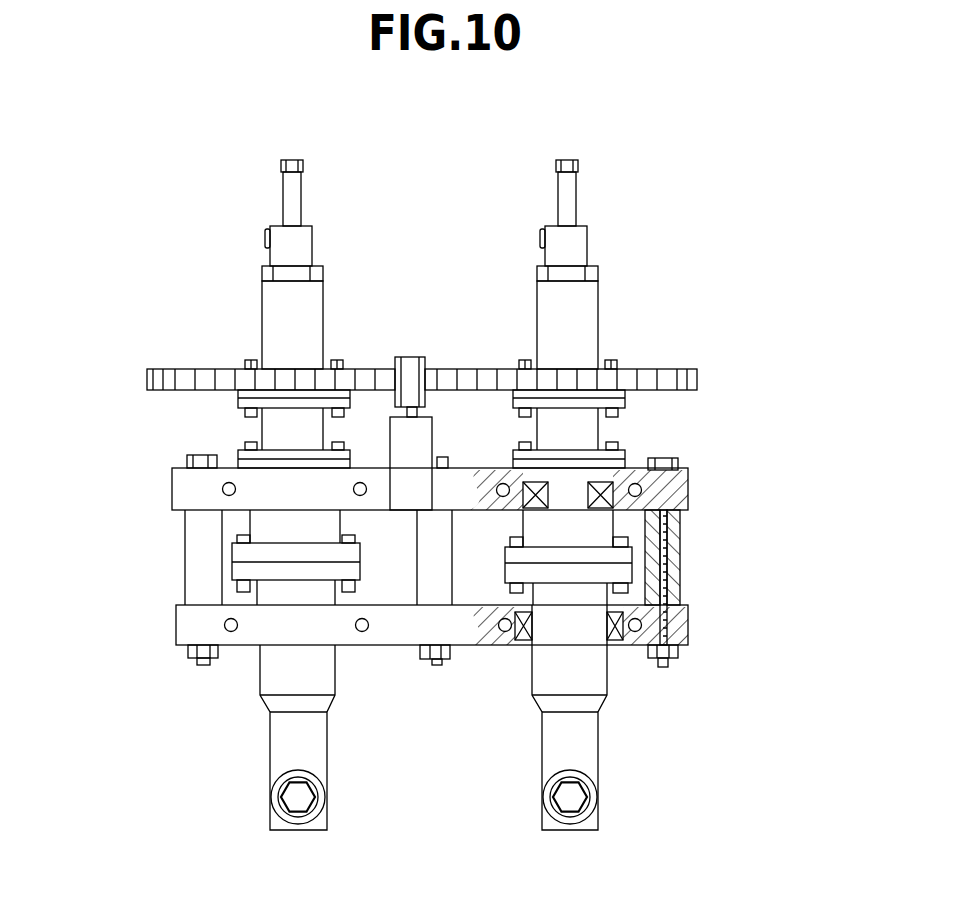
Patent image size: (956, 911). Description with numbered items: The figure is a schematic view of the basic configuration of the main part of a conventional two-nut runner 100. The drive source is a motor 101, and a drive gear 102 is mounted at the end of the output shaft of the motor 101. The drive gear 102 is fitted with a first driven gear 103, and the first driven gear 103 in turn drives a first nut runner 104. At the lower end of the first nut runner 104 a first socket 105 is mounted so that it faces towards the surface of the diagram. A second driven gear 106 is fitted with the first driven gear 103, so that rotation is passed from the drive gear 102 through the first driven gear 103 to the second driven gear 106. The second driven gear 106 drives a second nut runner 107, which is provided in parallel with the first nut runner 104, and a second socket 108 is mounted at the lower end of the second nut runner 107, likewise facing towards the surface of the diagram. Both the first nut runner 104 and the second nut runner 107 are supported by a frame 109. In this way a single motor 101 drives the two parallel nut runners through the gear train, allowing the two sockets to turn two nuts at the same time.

The two-nut runner 100 is at (762, 190).
The motor 101 is at (432, 437).
The drive gear 102 is at (410, 357).
The first driven gear 103 is at (173, 369).
The first nut runner 104 is at (262, 295).
The first socket 105 is at (270, 820).
The second driven gear 106 is at (675, 369).
The second nut runner 107 is at (598, 302).
The second socket 108 is at (598, 822).
The frame 109 is at (176, 625).